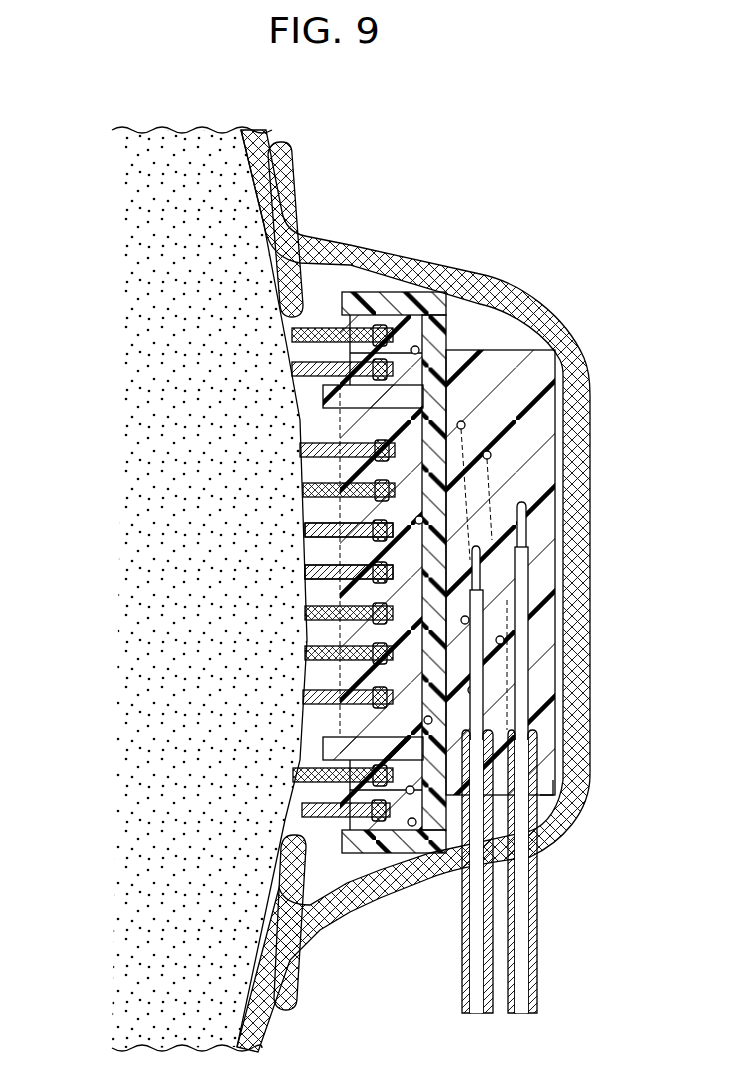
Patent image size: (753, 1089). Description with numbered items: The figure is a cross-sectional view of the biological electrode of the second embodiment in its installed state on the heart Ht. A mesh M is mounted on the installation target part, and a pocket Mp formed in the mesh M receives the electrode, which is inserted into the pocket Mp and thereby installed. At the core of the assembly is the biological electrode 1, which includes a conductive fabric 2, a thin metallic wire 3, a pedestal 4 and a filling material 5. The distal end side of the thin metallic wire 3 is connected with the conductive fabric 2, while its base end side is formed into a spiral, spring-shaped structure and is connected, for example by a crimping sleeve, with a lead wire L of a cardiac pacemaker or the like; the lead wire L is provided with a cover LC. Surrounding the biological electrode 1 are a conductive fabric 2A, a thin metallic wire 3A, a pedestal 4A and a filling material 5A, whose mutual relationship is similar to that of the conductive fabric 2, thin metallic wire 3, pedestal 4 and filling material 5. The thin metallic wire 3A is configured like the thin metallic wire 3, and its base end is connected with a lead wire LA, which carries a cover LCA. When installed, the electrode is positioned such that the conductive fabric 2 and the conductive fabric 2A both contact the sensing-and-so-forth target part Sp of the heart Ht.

The heart Ht is at (150, 290).
The pocket Mp is at (538, 302).
The mesh M is at (297, 290).
The sensing-and-so-forth target part Sp is at (300, 680).
The biological electrode 1 is at (290, 597).
The conductive fabric 2 is at (307, 550).
The thin metallic wire 3 is at (307, 517).
The pedestal 4 is at (325, 398).
The filling material 5 is at (540, 395).
The conductive fabric 2A is at (330, 340).
The thin metallic wire 3A is at (400, 345).
The pedestal 4A is at (420, 300).
The filling material 5A is at (440, 350).
The lead wire L is at (476, 680).
The lead wire LA is at (522, 705).
The cover LC is at (488, 948).
The cover LCA is at (532, 920).